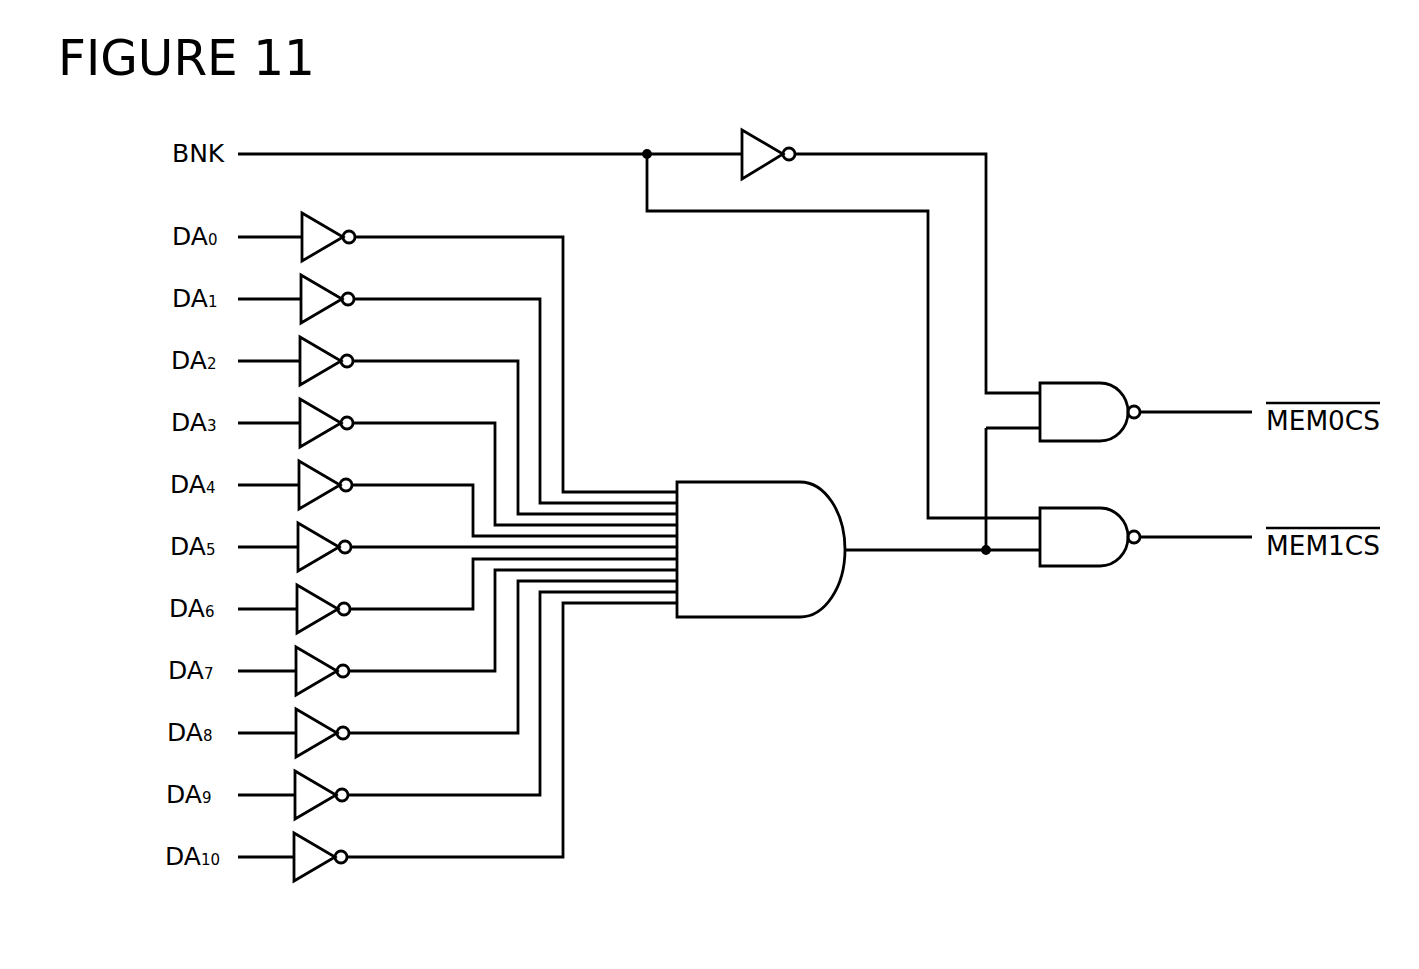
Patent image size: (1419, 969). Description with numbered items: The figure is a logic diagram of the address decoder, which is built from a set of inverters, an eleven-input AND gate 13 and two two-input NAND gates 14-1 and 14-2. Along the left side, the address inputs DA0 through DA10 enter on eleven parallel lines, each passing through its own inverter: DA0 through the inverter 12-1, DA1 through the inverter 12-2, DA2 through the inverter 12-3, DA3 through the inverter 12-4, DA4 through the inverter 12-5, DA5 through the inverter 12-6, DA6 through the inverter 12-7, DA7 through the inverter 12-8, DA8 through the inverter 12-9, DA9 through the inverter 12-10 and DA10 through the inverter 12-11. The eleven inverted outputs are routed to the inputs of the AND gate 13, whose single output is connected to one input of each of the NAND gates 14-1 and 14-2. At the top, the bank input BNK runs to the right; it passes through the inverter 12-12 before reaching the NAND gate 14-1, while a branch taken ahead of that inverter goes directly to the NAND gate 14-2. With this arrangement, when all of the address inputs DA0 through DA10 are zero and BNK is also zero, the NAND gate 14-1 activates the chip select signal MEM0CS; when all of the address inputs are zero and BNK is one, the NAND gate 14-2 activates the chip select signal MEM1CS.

The inverter 12-1 is at (319, 221).
The inverter 12-2 is at (318, 283).
The inverter 12-3 is at (317, 345).
The inverter 12-4 is at (317, 407).
The inverter 12-5 is at (316, 469).
The inverter 12-6 is at (315, 531).
The inverter 12-7 is at (314, 593).
The inverter 12-8 is at (313, 655).
The inverter 12-9 is at (313, 717).
The inverter 12-10 is at (312, 779).
The inverter 12-11 is at (311, 841).
The inverter 12-12 is at (762, 141).
The 11-input AND gate 13 is at (822, 608).
The 2-input NAND gate 14-1 is at (1088, 383).
The 2-input NAND gate 14-2 is at (1088, 508).